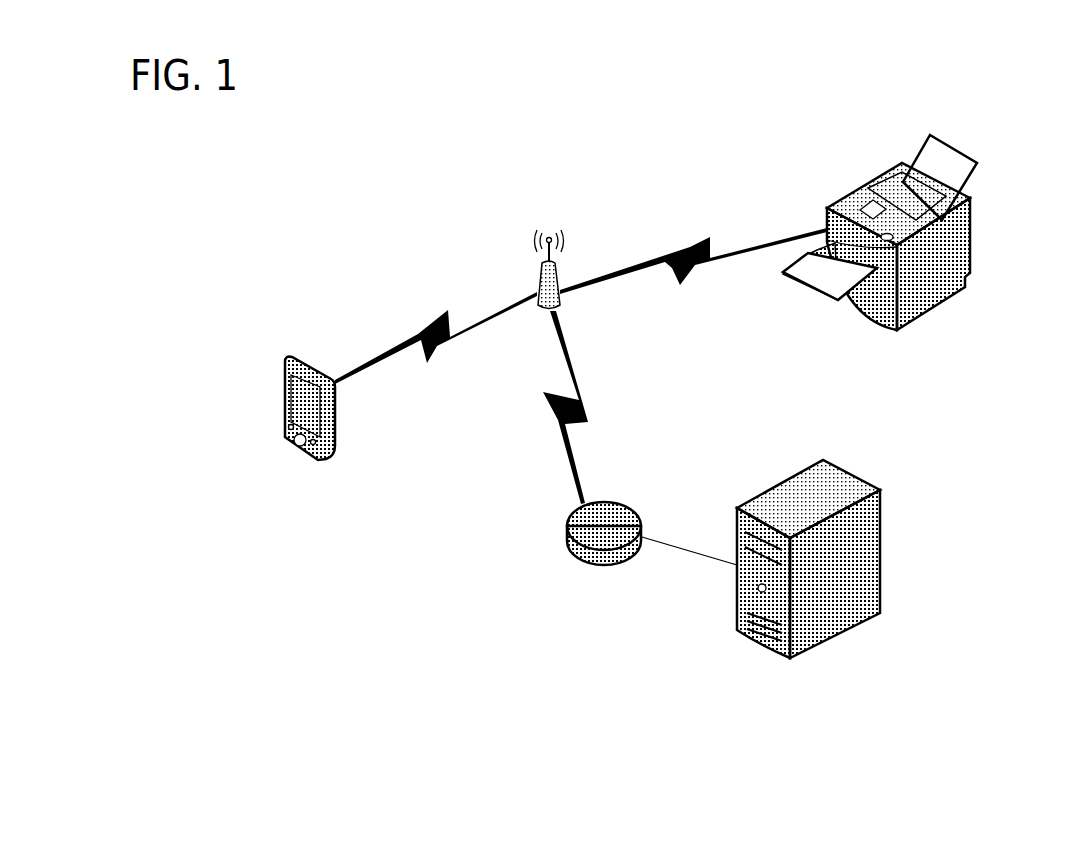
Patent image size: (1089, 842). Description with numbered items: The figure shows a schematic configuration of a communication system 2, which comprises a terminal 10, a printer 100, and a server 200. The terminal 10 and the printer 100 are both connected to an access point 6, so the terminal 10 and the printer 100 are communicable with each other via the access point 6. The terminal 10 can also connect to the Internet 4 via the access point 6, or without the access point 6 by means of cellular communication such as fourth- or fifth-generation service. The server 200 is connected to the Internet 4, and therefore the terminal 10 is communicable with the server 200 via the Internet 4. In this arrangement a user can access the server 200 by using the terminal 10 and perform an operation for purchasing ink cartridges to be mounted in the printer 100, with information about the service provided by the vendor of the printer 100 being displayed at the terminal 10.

The communication system 2 is at (424, 172).
The Internet 4 is at (620, 502).
The access point 6 is at (560, 283).
The terminal 10 is at (296, 356).
The printer 100 is at (970, 225).
The server 200 is at (880, 545).